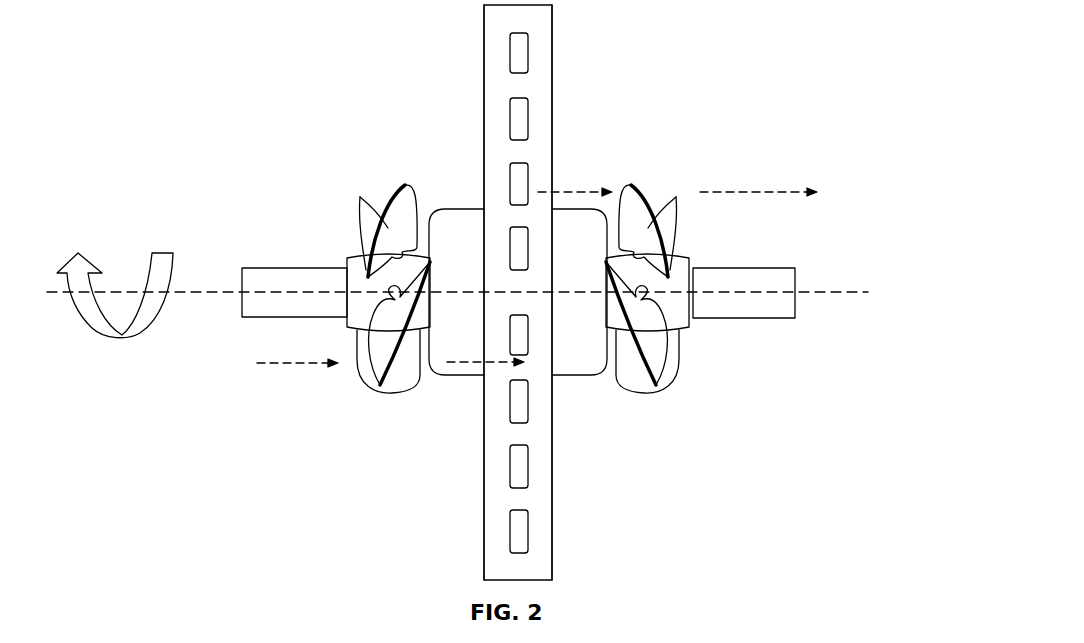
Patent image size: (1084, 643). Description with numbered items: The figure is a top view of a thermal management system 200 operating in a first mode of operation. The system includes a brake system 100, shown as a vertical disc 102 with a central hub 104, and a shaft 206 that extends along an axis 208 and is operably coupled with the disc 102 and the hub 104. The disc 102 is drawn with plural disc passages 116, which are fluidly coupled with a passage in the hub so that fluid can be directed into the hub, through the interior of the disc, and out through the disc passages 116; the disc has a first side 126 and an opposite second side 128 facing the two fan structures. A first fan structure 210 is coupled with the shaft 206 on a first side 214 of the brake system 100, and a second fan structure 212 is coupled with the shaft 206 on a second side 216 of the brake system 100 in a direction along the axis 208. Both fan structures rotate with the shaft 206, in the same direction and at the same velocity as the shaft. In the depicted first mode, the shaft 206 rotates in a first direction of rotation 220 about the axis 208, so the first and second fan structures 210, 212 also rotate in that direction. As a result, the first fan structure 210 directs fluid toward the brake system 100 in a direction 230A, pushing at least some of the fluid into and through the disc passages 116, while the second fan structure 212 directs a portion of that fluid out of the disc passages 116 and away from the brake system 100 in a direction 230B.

The brake system 100 is at (408, 63).
The disc 102 is at (552, 35).
The hub 104 is at (563, 209).
The disc passages 116 is at (510, 532).
The first side of panel 126 is at (484, 50).
The second side of panel 128 is at (553, 80).
The thermal management system 200 is at (298, 76).
The shaft 206 is at (263, 268).
The axis 208 is at (832, 292).
The first fan structure 210 is at (356, 180).
The second fan structure 212 is at (677, 180).
The first side 214 is at (365, 330).
The second side 216 is at (672, 321).
The first direction of rotation 220 is at (113, 252).
The direction toward the brake system 230A is at (290, 363).
The direction away from the brake system 230B is at (595, 192).